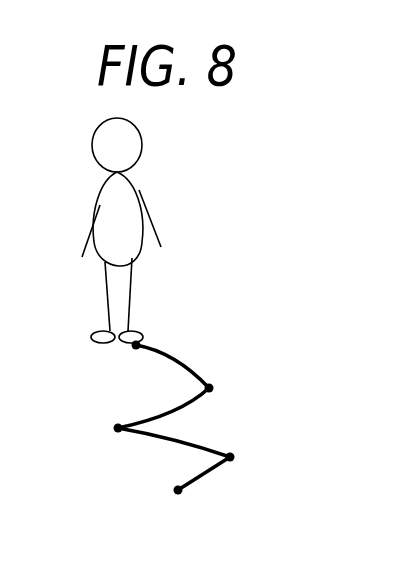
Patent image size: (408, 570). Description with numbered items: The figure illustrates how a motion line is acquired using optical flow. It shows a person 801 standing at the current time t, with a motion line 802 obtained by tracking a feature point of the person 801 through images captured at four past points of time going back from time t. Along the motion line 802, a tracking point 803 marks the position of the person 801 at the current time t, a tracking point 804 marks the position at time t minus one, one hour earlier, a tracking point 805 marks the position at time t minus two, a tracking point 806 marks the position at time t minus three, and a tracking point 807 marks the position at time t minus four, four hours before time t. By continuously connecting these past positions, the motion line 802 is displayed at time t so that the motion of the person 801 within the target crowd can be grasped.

The person 801 is at (151, 230).
The motion line 802 is at (147, 438).
The tracking point 803 is at (172, 323).
The tracking point 804 is at (208, 364).
The tracking point 805 is at (86, 413).
The tracking point 806 is at (266, 447).
The tracking point 807 is at (182, 508).